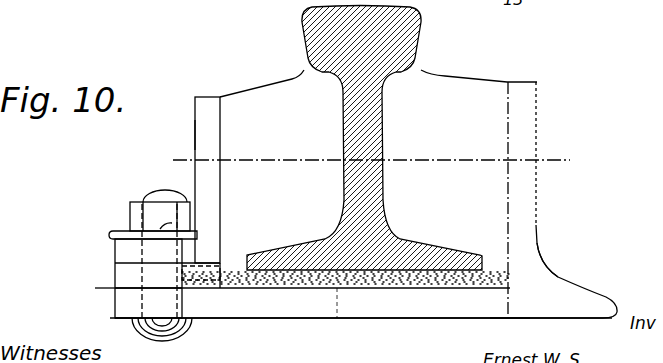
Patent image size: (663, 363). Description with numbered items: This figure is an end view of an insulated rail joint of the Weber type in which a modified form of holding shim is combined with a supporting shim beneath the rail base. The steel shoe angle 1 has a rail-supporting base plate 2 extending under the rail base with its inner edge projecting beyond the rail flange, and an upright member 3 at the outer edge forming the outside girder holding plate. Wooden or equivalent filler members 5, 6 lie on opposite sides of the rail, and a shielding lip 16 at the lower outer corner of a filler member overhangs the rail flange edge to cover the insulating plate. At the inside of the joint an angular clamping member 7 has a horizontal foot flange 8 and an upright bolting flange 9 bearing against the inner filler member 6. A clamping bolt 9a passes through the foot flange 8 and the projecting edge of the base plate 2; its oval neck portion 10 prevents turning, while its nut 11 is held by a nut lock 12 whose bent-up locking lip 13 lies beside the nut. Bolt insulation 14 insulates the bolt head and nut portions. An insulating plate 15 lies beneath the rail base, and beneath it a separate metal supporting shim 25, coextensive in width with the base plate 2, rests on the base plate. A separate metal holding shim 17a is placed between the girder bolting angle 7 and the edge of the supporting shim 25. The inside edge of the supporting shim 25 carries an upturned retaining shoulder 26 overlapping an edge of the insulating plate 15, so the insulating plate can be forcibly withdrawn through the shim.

The shoe angle 1 is at (600, 272).
The rail-supporting base plate 2 is at (361, 306).
The upright member 3 is at (538, 90).
The filler member 5 is at (477, 81).
The filler member 6 is at (270, 90).
The angular clamping member 7 is at (200, 140).
The horizontal foot flange 8 is at (128, 258).
The upright bolting flange 9 is at (207, 97).
The clamping bolt 9a is at (161, 194).
The oval neck portion 10 is at (178, 303).
The nut 11 is at (133, 212).
The nut lock 12 is at (111, 235).
The locking lip 13 is at (194, 268).
The bolt insulation 14 is at (222, 282).
The insulating plate 15 is at (478, 287).
The shielding lip 16 is at (539, 248).
The metal holding shim 17a is at (127, 273).
The metal supporting shim 25 is at (337, 286).
The upturned retaining shoulder 26 is at (510, 335).